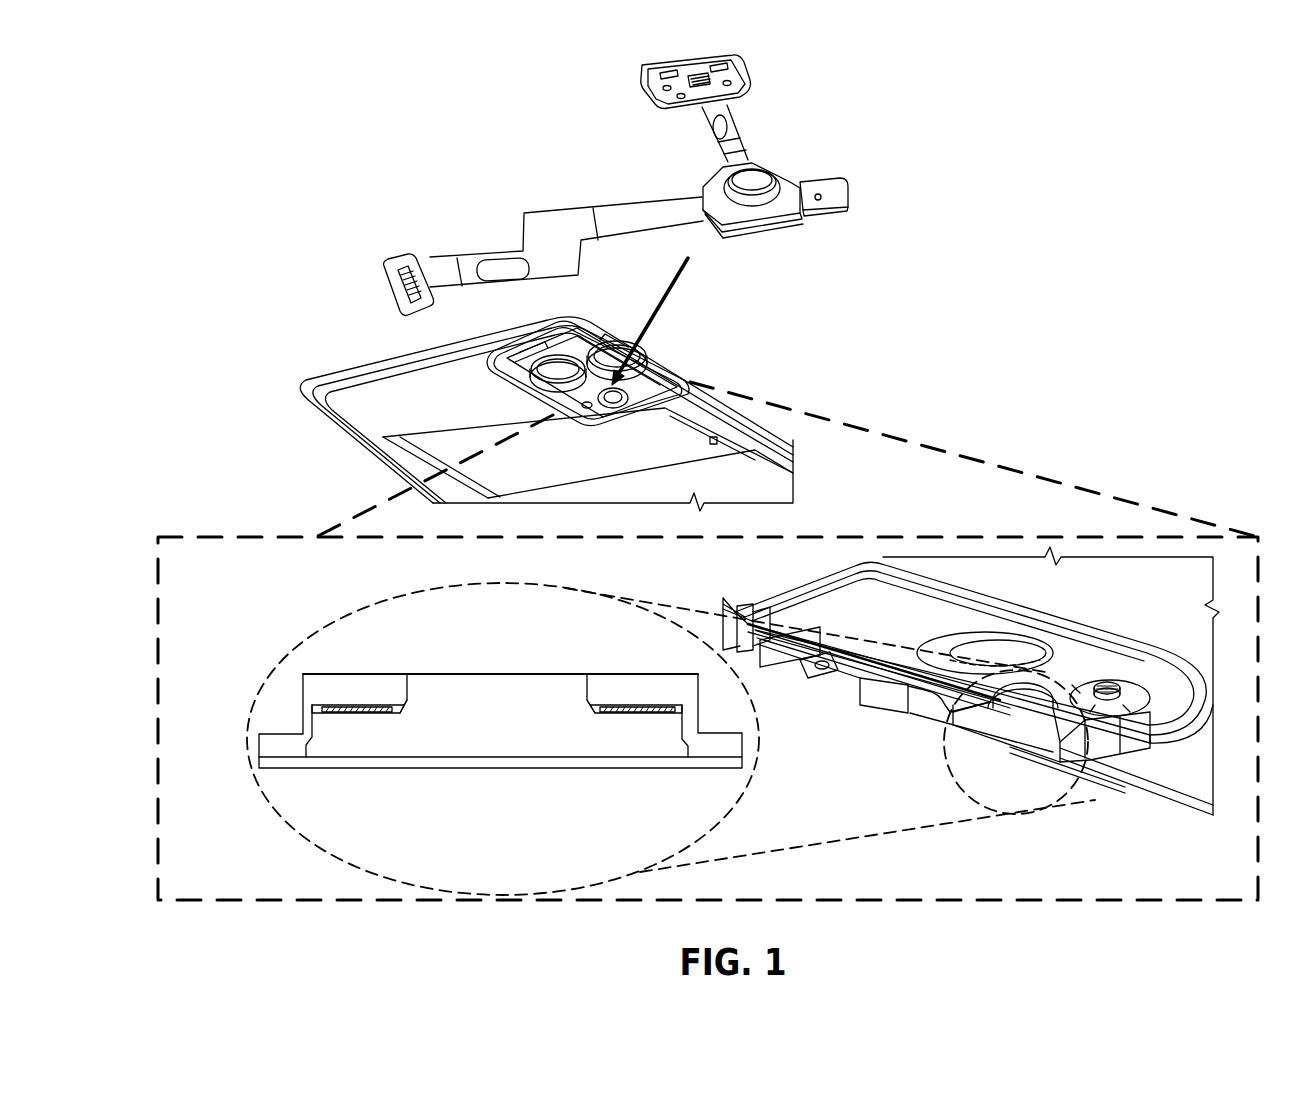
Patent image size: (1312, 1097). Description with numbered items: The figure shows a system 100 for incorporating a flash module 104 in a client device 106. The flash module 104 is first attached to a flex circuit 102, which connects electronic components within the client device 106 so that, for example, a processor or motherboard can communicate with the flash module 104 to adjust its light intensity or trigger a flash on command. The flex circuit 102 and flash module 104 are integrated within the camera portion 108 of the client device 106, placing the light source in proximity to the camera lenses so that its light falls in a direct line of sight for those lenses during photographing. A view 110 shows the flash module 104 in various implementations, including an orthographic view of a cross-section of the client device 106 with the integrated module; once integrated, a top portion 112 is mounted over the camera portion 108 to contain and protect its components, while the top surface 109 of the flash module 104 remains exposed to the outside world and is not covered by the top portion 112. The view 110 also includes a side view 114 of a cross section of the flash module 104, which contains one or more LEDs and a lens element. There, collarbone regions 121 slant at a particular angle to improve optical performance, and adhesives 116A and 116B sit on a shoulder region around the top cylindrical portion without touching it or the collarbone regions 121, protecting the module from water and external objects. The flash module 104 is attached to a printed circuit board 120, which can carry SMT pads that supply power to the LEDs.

The system 100 is at (1246, 100).
The flex circuit 102 is at (553, 212).
The flash module 104 is at (810, 228).
The client device 106 is at (362, 443).
The camera portion 108 is at (663, 373).
The top surface 109 is at (493, 674).
The view 110 is at (162, 537).
The top portion 112 is at (907, 622).
The side view 114 is at (287, 653).
The adhesive 116A is at (322, 710).
The adhesive 116B is at (600, 710).
The printed circuit board 120 is at (665, 758).
The collarbone regions 121 is at (410, 715).